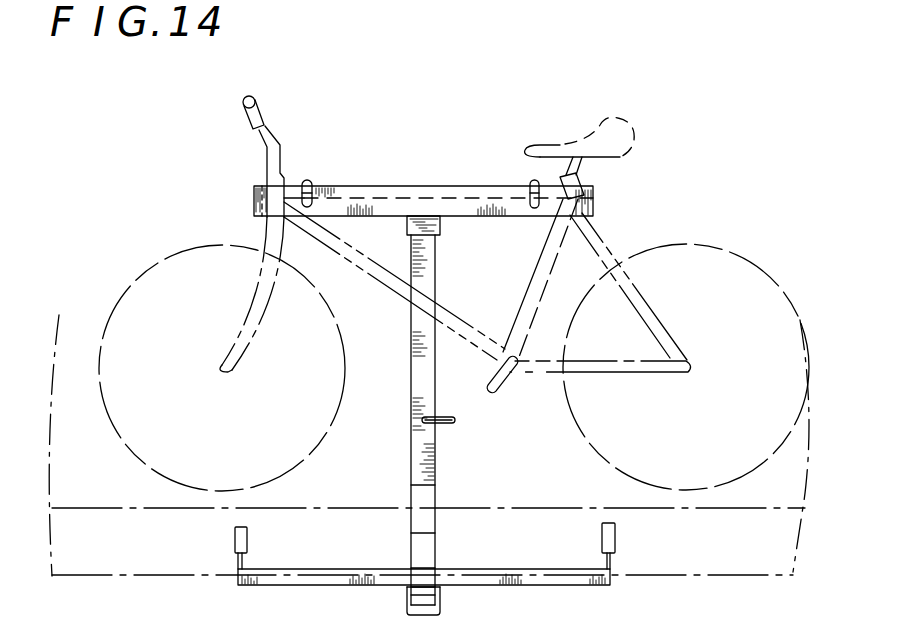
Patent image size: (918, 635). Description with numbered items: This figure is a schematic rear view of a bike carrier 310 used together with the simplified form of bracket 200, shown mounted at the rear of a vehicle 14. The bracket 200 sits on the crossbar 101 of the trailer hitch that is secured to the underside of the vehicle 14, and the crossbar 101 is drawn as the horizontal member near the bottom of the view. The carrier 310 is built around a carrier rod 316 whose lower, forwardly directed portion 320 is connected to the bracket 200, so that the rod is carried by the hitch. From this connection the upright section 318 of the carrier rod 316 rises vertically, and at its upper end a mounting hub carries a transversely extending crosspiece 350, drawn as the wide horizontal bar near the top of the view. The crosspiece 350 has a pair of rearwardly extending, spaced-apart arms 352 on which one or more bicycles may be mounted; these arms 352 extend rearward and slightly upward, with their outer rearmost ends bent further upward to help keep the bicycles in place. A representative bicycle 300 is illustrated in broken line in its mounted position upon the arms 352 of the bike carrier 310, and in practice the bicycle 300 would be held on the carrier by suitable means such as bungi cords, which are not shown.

The vehicle 14 is at (808, 465).
The crossbar 101 is at (277, 586).
The bracket 200 is at (408, 595).
The bicycle 300 is at (626, 115).
The bike carrier 310 is at (509, 447).
The carrier rod 316 is at (411, 452).
The upright section 318 is at (410, 357).
The lower forwardly directed portion 320 is at (440, 598).
The crosspiece 350 is at (465, 218).
The arms 352 is at (312, 190).